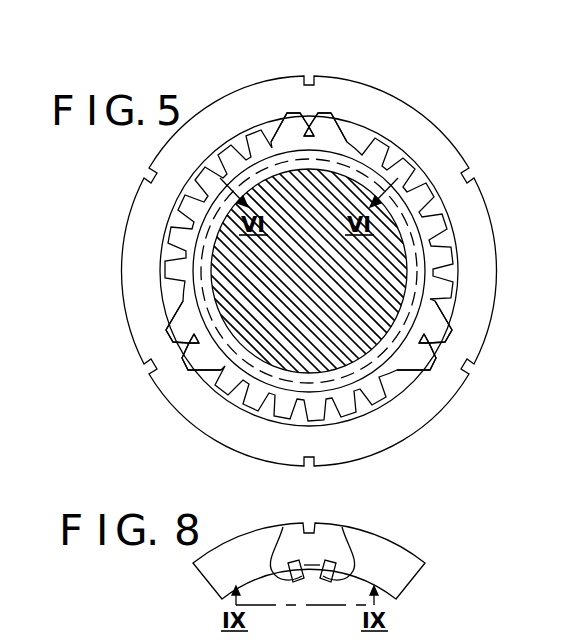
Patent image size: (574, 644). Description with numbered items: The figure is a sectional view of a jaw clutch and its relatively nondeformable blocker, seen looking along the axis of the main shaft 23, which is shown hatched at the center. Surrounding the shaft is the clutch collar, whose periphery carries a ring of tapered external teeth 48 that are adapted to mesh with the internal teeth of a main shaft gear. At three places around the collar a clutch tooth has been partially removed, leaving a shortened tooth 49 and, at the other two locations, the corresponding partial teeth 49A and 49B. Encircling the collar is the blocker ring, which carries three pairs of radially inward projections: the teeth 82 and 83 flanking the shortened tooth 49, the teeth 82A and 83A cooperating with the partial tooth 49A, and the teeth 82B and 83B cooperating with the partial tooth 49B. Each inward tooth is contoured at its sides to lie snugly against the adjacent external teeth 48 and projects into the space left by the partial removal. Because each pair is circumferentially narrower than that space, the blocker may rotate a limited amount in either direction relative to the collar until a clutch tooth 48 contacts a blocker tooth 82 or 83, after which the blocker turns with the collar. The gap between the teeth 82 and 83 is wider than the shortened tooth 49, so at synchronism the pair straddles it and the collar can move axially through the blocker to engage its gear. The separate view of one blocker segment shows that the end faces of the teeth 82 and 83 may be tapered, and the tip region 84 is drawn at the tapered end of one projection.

In FIG. 5, the external teeth 48 is at (381, 136).
In FIG. 8, the external teeth 48 is at (309, 561).
In FIG. 5, the main shaft 23 is at (247, 287).
In FIG. 5, the inward projection 82 is at (344, 120).
In FIG. 8, the inward projection 82 is at (342, 531).
In FIG. 5, the inward projection 83 is at (279, 115).
In FIG. 8, the inward projection 83 is at (284, 530).
In FIG. 5, the finger tip 84 is at (316, 120).
In FIG. 5, the shortened tooth 49 is at (309, 125).
In FIG. 5, the inward projection 82A is at (424, 380).
In FIG. 5, the inward projection 83A is at (446, 318).
In FIG. 5, the partially removed tooth 49A is at (441, 350).
In FIG. 5, the inward projection 82B is at (176, 326).
In FIG. 5, the inward projection 83B is at (206, 388).
In FIG. 5, the partially removed tooth 49B is at (182, 356).